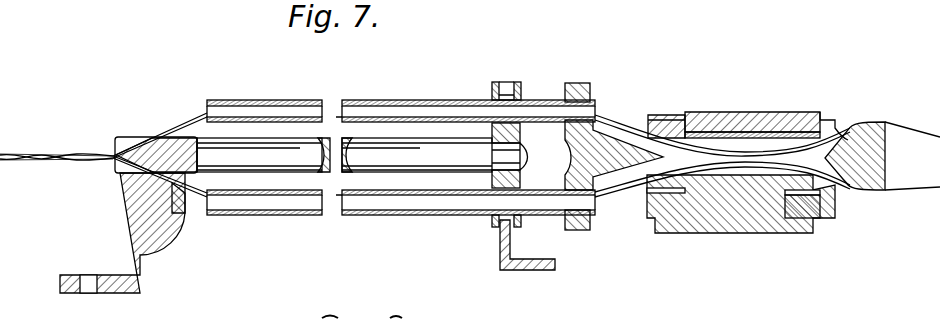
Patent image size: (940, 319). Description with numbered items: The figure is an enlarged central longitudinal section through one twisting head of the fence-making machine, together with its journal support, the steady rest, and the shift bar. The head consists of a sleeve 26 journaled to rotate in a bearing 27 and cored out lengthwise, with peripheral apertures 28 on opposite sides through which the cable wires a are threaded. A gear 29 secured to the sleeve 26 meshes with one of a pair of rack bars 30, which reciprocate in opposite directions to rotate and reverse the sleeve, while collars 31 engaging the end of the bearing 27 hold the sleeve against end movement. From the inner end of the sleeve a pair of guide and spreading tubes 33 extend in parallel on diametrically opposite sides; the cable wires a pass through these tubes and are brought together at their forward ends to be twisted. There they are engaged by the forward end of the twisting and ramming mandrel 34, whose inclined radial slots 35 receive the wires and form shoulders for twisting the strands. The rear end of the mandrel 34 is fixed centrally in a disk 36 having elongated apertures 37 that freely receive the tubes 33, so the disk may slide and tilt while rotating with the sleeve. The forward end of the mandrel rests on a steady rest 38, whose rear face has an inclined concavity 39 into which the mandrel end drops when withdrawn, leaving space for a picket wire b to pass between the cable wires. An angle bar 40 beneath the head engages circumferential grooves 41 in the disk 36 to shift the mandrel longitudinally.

The cable wires a is at (920, 184).
The picket wires b is at (48, 156).
The sleeve 26 is at (733, 134).
The bearing 27 is at (777, 118).
The peripheral apertures 28 is at (640, 172).
The gear 29 is at (664, 115).
The rack bars 30 is at (660, 216).
The collars 31 is at (828, 119).
The guide and spreading tubes 33 is at (297, 100).
The twisting and ramming mandrel 34 is at (248, 158).
The inclined radial slots 35 is at (140, 137).
The disk 36 is at (492, 92).
The elongated apertures 37 is at (521, 100).
The steady rest 38 is at (120, 221).
The inclined concavity 39 is at (176, 196).
The angle bar 40 is at (500, 244).
The circumferential grooves 41 is at (505, 88).